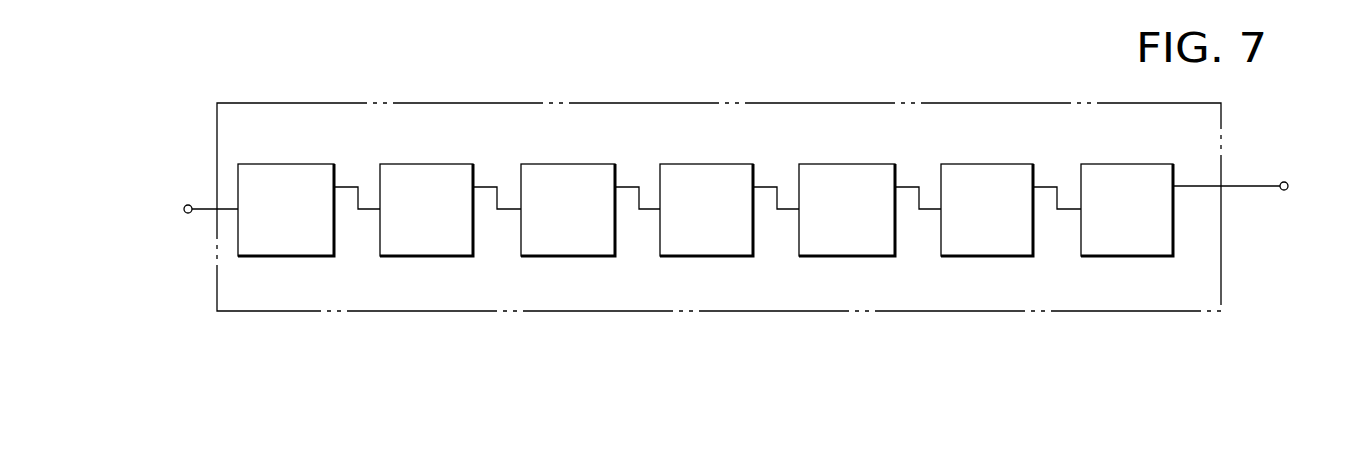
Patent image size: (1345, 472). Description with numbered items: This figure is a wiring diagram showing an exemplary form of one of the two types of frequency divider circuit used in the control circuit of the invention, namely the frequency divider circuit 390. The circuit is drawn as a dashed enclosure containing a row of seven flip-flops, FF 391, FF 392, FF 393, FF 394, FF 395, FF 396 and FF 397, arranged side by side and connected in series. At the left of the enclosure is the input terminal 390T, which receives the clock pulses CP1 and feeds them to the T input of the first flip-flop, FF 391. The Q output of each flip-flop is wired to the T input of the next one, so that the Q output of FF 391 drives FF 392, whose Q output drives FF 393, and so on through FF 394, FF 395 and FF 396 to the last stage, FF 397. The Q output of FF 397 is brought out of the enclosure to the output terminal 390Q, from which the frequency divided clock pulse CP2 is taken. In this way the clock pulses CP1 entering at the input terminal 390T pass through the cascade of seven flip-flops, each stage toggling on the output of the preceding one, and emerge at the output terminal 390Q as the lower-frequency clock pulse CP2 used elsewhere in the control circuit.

The frequency divider circuit 390 is at (705, 103).
The input terminal 390T is at (188, 204).
The output terminal 390Q is at (1284, 181).
The FF 391 is at (289, 164).
The FF 392 is at (429, 164).
The FF 393 is at (571, 164).
The FF 394 is at (709, 164).
The FF 395 is at (850, 164).
The FF 396 is at (990, 164).
The FF 397 is at (1130, 164).